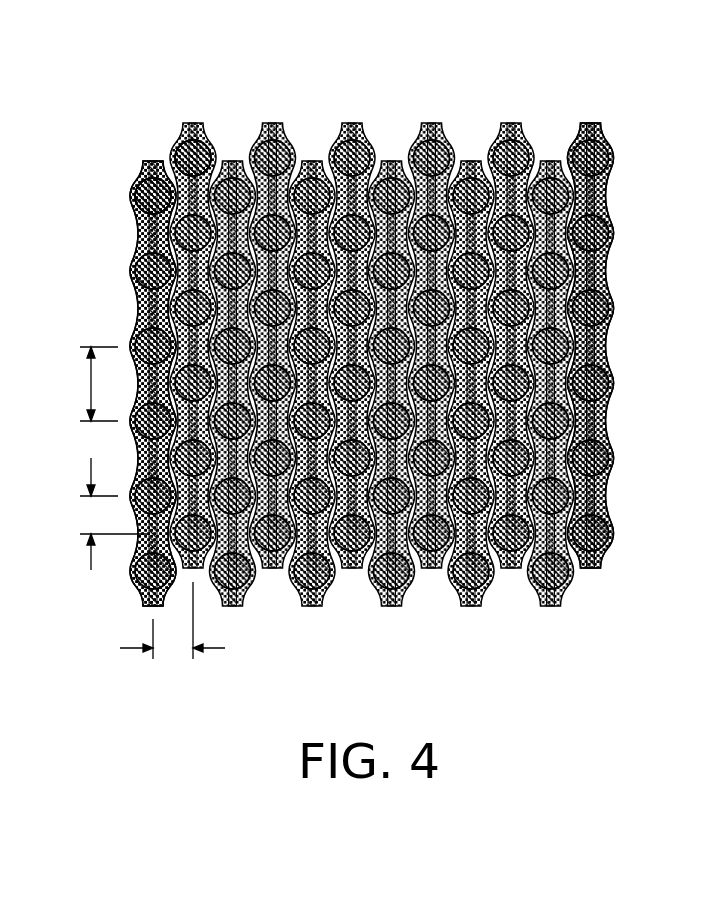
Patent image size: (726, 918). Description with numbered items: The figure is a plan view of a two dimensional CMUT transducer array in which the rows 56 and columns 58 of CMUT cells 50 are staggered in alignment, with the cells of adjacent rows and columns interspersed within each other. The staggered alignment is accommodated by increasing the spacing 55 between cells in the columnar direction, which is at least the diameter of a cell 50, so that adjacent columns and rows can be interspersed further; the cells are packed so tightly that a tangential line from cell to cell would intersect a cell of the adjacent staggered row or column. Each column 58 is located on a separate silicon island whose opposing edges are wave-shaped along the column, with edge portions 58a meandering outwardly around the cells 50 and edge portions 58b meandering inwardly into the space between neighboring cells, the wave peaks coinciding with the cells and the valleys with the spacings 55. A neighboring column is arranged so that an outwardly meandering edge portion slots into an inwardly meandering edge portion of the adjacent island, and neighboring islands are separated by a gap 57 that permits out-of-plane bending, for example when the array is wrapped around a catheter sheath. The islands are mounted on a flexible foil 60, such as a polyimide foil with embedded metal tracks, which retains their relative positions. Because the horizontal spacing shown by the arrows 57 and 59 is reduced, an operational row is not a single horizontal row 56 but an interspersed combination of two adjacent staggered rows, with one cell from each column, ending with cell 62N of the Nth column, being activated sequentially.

The CMUT cell 50 is at (212, 147).
The spacing 55 is at (91, 382).
The row 56 is at (372, 368).
The gap 57 is at (173, 648).
The column 58 is at (431, 104).
The outwardly meandering edge portion 58a is at (287, 583).
The inwardly meandering edge portion 58b is at (325, 535).
The horizontal spacing 59 is at (91, 512).
The flexible foil 60 is at (145, 320).
The cell of operational row 62N is at (140, 593).